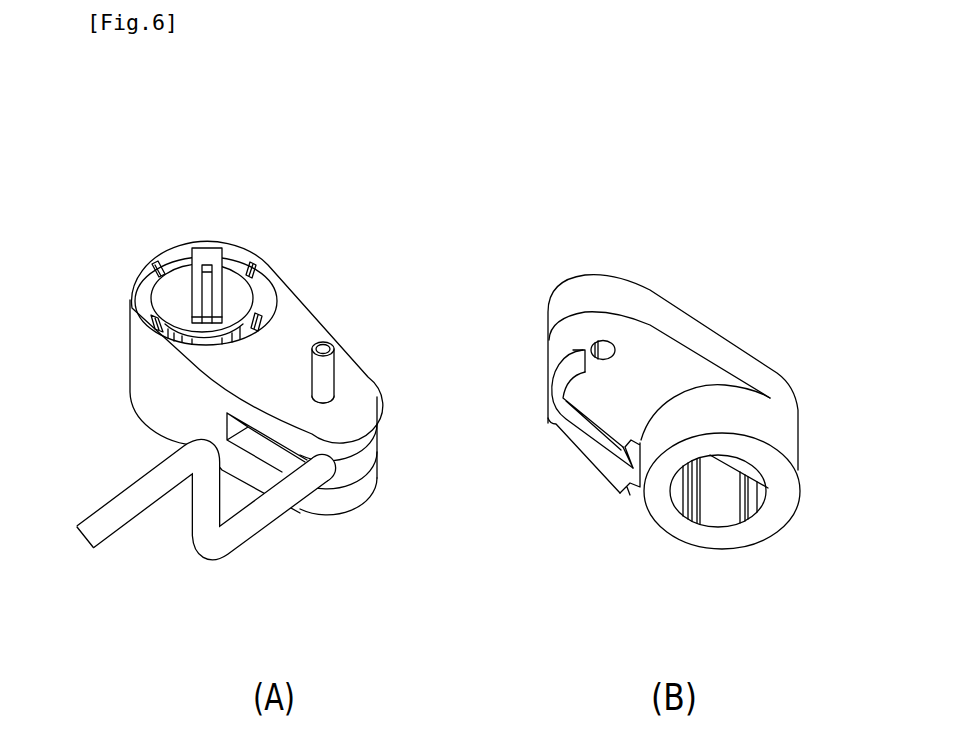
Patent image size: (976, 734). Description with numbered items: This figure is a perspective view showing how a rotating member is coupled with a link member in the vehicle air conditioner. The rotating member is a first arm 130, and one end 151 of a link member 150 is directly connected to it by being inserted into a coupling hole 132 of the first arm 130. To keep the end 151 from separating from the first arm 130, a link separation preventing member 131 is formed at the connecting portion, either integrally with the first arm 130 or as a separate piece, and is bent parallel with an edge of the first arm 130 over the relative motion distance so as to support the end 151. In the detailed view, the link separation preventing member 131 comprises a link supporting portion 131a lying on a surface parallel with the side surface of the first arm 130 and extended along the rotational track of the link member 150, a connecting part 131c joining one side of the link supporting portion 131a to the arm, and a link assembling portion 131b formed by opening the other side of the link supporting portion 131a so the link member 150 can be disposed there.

The first arm 130 is at (236, 258).
The link separation preventing member 131 is at (363, 508).
The link supporting portion 131a is at (558, 417).
The link assembling portion 131b is at (633, 387).
The connecting part 131c is at (633, 497).
The coupling hole 132 is at (342, 388).
The link member 150 is at (119, 494).
The end of the link member 151 is at (325, 347).